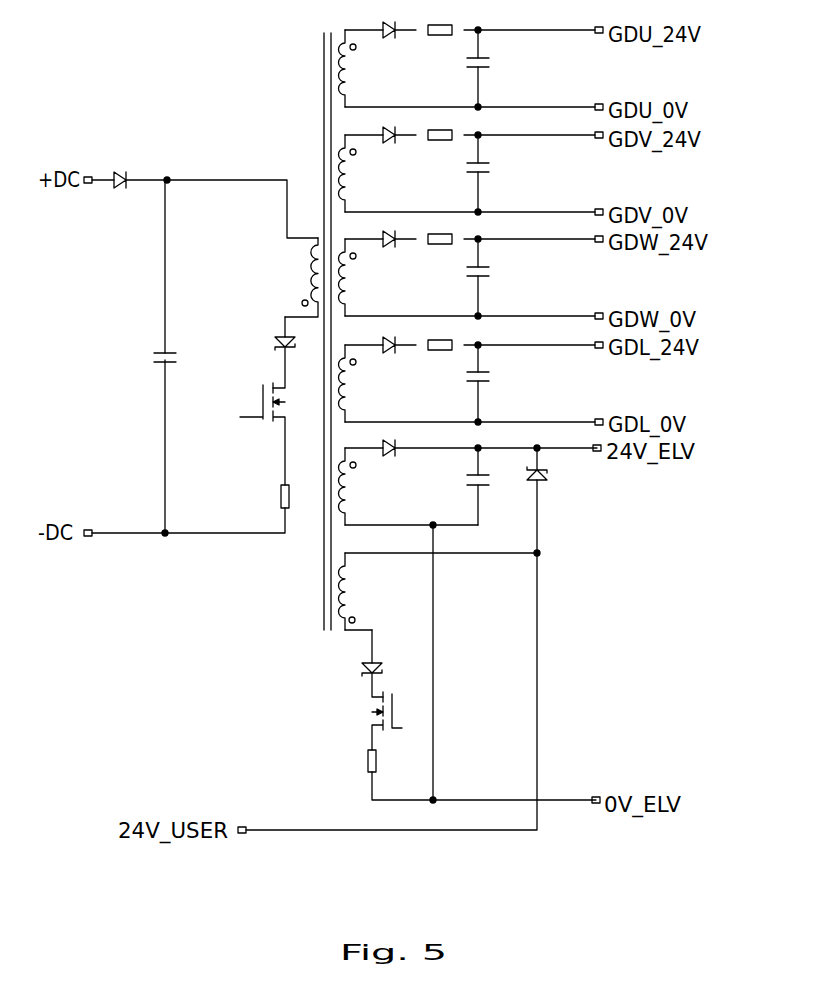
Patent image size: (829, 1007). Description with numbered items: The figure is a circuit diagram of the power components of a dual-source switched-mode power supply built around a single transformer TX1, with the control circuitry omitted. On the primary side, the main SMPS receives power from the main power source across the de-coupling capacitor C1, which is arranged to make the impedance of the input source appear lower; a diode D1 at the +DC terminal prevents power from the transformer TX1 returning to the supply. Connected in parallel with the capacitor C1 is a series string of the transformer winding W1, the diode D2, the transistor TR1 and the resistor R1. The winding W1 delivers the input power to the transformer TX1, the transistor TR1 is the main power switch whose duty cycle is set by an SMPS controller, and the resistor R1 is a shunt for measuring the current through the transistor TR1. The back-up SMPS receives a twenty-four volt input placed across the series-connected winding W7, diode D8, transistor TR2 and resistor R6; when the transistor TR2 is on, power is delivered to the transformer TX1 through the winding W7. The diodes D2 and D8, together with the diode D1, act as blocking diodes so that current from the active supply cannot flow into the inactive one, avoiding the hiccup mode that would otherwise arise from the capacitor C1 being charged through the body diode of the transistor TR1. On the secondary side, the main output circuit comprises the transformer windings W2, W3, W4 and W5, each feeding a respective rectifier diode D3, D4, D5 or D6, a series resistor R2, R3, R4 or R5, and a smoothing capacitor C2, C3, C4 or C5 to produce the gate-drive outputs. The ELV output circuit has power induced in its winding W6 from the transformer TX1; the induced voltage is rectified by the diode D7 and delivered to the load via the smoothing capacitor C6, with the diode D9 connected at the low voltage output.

The transformer TX1 is at (295, 331).
The diode D1 is at (122, 195).
The diode D2 is at (267, 344).
The diode D3 is at (389, 46).
The diode D4 is at (389, 151).
The diode D5 is at (389, 255).
The diode D6 is at (389, 361).
The diode D7 is at (389, 463).
The diode D8 is at (356, 667).
The diode D9 is at (553, 500).
The capacitor C1 is at (178, 356).
The capacitor C2 is at (492, 68).
The capacitor C3 is at (492, 173).
The capacitor C4 is at (492, 277).
The capacitor C5 is at (492, 383).
The capacitor C6 is at (492, 486).
The resistor R1 is at (270, 502).
The resistor R2 is at (439, 44).
The resistor R3 is at (439, 149).
The resistor R4 is at (439, 253).
The resistor R5 is at (439, 359).
The resistor R6 is at (386, 769).
The transformer winding W1 is at (295, 277).
The transformer winding W2 is at (409, 68).
The transformer winding W3 is at (409, 173).
The transformer winding W4 is at (409, 277).
The transformer winding W5 is at (409, 383).
The transformer winding W6 is at (409, 486).
The transformer winding W7 is at (438, 591).
The transistor TR1 is at (262, 434).
The transistor TR2 is at (363, 721).